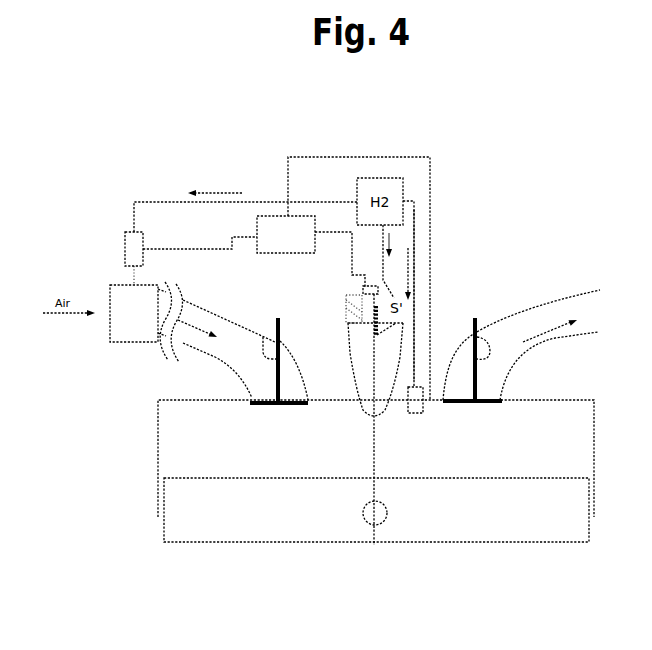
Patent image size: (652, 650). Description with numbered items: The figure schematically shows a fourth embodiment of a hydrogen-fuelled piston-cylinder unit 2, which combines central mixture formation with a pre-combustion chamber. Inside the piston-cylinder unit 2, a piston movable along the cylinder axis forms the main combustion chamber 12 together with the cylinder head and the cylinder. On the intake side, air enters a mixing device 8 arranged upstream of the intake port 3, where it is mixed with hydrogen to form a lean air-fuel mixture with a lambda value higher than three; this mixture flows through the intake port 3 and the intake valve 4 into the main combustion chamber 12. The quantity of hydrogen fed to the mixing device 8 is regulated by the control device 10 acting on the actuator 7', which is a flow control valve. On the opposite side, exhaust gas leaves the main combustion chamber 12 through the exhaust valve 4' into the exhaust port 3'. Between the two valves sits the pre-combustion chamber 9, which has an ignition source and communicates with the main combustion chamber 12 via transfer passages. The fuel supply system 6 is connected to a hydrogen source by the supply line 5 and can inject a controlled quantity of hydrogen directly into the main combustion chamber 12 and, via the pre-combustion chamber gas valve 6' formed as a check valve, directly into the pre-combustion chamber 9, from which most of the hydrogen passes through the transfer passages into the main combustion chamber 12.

The piston-cylinder unit 2 is at (131, 457).
The intake port 3 is at (233, 341).
The exhaust port 3' is at (521, 345).
The intake valve 4 is at (267, 384).
The exhaust valve 4' is at (485, 383).
The supply line 5 is at (420, 232).
The fuel supply system 6 is at (429, 417).
The pre-combustion chamber gas valve 6' is at (336, 319).
The actuator 7' is at (120, 237).
The mixing device 8 is at (134, 313).
The pre-combustion chamber 9 is at (375, 415).
The control device 10 is at (286, 234).
The main combustion chamber 12 is at (307, 468).